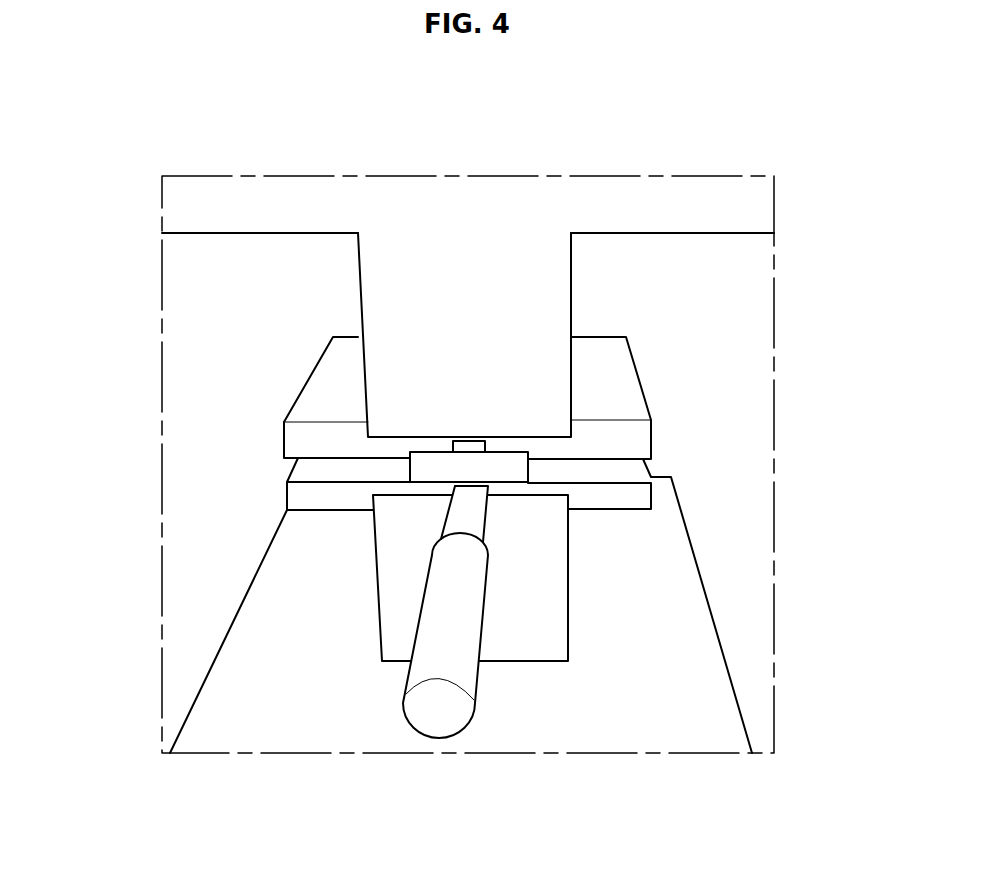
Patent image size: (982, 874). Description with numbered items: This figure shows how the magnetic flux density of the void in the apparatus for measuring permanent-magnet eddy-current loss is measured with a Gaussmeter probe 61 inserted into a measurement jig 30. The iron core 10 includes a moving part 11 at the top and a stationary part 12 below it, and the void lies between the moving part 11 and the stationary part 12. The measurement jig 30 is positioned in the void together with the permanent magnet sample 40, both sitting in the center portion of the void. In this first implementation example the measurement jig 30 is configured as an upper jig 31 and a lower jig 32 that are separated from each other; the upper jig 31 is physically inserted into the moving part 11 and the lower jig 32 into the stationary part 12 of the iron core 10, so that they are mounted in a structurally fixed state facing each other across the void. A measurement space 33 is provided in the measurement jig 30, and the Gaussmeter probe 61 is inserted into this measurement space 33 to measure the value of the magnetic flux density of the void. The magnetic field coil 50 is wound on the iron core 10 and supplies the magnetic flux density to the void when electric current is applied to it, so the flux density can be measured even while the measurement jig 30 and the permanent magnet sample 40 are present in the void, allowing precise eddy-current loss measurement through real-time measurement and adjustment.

The iron core 10 is at (468, 255).
The moving part 11 is at (455, 285).
The stationary part 12 is at (533, 622).
The measurement jig 30 is at (463, 424).
The upper jig 31 is at (612, 383).
The lower jig 32 is at (642, 490).
The measurement space 33 is at (470, 447).
The permanent magnet sample 40 is at (437, 460).
The magnetic field coil 50 is at (247, 680).
The Gaussmeter probe 61 is at (442, 708).